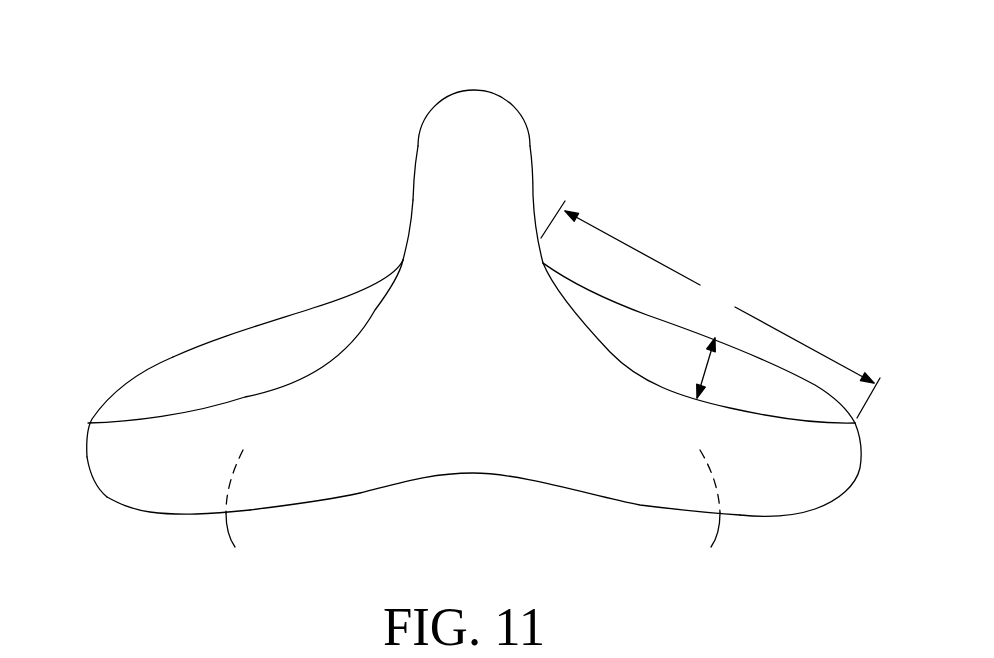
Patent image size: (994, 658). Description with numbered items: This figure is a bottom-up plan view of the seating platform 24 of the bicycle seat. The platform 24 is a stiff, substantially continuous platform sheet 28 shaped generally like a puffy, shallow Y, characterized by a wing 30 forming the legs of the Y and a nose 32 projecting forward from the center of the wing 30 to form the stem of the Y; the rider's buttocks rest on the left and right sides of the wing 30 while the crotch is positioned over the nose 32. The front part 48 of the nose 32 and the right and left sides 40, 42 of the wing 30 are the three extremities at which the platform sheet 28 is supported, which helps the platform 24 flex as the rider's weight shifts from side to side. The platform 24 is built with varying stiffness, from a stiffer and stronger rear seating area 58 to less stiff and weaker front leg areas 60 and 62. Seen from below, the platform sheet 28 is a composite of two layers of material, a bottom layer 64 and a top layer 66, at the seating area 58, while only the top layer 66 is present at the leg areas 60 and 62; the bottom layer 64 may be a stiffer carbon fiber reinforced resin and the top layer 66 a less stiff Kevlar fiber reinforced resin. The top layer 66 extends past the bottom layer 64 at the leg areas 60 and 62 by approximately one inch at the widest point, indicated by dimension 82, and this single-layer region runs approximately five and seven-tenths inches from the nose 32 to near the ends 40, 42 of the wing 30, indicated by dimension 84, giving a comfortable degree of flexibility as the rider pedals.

The platform 24 is at (233, 207).
The platform sheet 28 is at (406, 246).
The wing 30 is at (298, 327).
The nose 32 is at (437, 148).
The right side of platform wing 40 is at (861, 457).
The left side of platform wing 42 is at (87, 455).
The front part of platform nose 48 is at (476, 91).
The rear seating area 58 is at (477, 513).
The front leg area 60 is at (652, 315).
The front leg area 62 is at (218, 340).
The bottom layer 64 is at (120, 480).
The top layer 66 is at (120, 405).
The dimension 82 is at (723, 368).
The dimension 84 is at (710, 309).